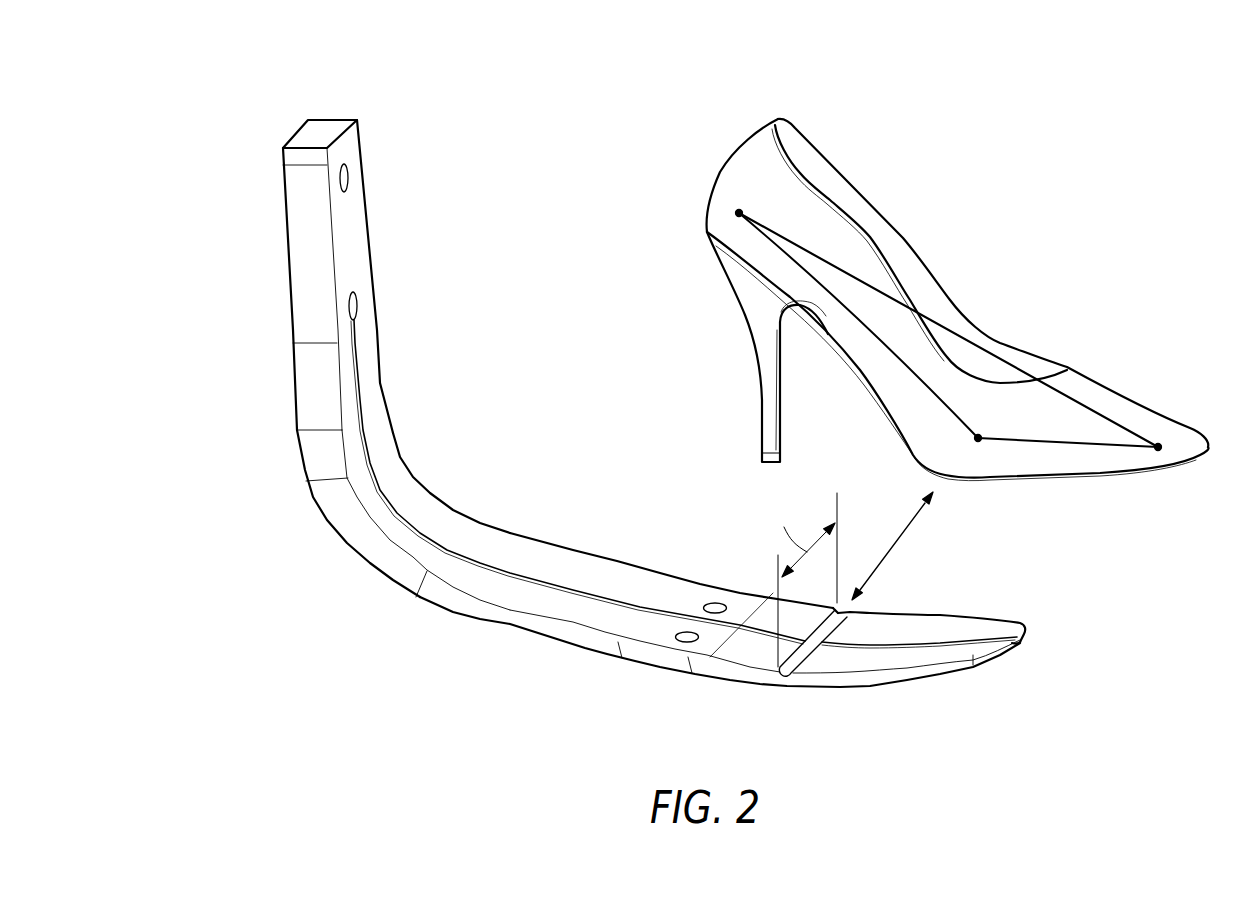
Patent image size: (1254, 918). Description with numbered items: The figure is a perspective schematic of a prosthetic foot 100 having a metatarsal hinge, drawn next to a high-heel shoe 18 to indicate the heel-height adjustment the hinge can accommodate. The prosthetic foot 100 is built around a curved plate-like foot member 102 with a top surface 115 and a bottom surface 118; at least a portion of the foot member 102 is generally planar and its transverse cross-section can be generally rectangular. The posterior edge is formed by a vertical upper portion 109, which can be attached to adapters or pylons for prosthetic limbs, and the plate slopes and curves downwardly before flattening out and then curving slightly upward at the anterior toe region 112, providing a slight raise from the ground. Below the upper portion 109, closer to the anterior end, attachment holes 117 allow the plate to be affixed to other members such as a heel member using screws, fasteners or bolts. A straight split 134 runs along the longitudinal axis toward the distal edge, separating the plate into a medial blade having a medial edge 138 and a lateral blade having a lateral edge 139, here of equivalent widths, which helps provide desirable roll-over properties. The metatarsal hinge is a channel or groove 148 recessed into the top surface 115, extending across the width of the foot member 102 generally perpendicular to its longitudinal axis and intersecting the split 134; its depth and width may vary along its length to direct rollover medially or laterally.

The prosthetic foot 100 is at (237, 128).
The foot member 102 is at (343, 105).
The upper portion 109 is at (300, 243).
The split 134 is at (348, 478).
The top surface 115 is at (417, 517).
The medial edge 138 is at (497, 527).
The lateral edge 139 is at (433, 603).
The attachment holes 117 is at (680, 632).
The groove 148 is at (783, 685).
The bottom surface 118 is at (862, 687).
The toe region 112 is at (917, 677).
The high-heel shoe 18 is at (732, 157).